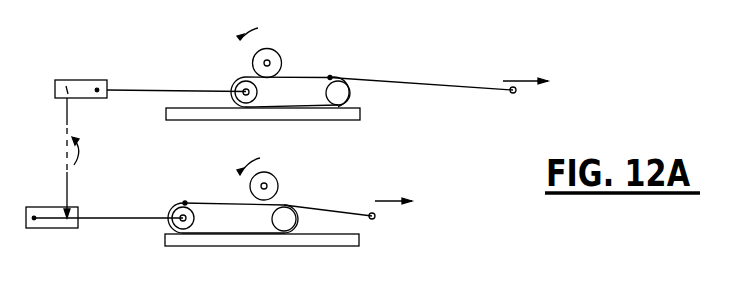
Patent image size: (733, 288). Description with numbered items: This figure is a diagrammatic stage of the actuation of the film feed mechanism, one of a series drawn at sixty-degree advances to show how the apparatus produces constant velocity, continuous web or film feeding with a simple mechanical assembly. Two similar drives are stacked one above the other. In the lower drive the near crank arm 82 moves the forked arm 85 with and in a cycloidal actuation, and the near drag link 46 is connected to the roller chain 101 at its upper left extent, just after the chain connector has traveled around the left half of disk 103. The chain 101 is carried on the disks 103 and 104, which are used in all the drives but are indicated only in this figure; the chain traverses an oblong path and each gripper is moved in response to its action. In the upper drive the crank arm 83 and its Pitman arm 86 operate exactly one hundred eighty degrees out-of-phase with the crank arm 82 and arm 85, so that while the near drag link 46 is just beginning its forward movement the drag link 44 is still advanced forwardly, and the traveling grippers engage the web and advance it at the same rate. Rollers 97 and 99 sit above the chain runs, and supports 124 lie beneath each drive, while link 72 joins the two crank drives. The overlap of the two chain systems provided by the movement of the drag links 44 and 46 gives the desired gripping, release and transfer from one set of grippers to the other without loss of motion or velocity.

The drag link 44 is at (418, 82).
The drag link 46 is at (333, 210).
The linkage 72 is at (67, 175).
The crank arm 82 is at (50, 228).
The crank arm 83 is at (88, 80).
The forked arm 85 is at (131, 218).
The shaft 86 is at (162, 90).
The pinch roller 97 is at (278, 184).
The pinch roller 99 is at (275, 51).
The roller chain 101 is at (218, 203).
The disk 103 is at (258, 97).
The disk 104 is at (350, 97).
The support plate 124 is at (358, 120).